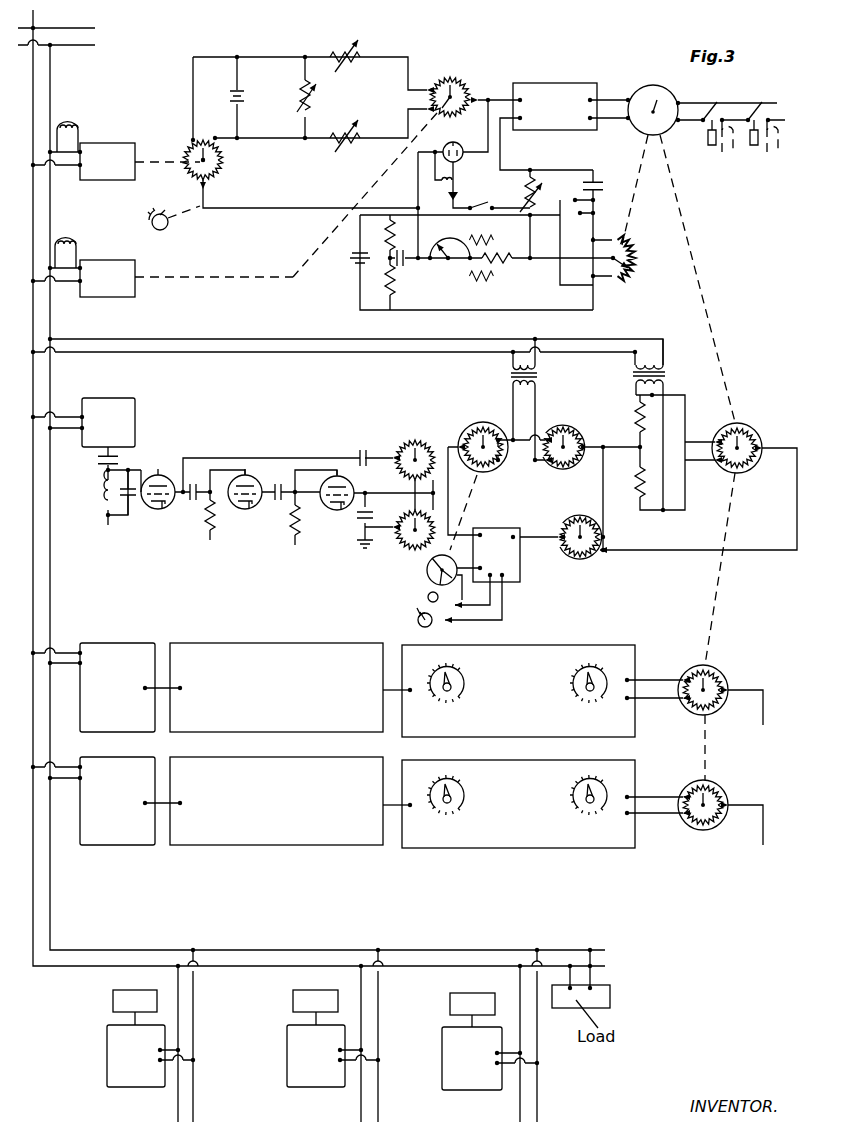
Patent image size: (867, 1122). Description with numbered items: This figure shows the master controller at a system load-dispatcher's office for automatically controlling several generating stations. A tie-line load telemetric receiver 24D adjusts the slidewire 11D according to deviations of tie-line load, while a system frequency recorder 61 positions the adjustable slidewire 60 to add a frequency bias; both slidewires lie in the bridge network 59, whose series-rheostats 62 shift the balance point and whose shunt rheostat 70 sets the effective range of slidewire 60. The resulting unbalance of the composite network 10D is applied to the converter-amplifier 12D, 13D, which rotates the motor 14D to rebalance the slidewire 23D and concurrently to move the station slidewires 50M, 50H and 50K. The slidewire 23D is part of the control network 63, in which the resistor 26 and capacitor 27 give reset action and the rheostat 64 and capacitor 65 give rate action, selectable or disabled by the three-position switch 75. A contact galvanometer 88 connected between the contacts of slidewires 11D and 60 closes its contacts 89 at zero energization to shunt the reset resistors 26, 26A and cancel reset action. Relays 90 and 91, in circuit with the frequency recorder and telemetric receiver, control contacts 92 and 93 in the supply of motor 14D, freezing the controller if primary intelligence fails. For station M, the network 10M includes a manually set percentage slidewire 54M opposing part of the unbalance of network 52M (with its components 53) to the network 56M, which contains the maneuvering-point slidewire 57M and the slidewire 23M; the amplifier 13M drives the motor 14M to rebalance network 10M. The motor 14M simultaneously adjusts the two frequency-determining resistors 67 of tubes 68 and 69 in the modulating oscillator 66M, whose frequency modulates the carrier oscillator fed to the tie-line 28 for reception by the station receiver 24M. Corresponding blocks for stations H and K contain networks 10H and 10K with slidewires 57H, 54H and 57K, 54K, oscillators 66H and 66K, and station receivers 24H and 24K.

The tie-line 28 is at (33, 540).
The relay 90 is at (60, 124).
The relay 91 is at (58, 240).
The contacts 92 is at (717, 98).
The contacts 93 is at (762, 98).
The telemetric receiver 24D is at (140, 161).
The system frequency recorder 61 is at (186, 278).
The composite network 10D is at (283, 146).
The slidewire 11D is at (222, 168).
The bridge network 59 is at (310, 101).
The shunt rheostat 70 is at (300, 95).
The series-rheostats 62 is at (342, 52).
The adjustable slidewire 60 is at (458, 78).
The converter-amplifier 12D is at (570, 106).
The converter-amplifier 13D is at (564, 141).
The motor 14D is at (641, 87).
The contact galvanometer 88 is at (462, 158).
The contacts 89 is at (448, 196).
The rheostat 64 is at (522, 187).
The capacitor 65 is at (598, 180).
The three-position switch 75 is at (602, 198).
The control network 63 is at (481, 262).
The capacitor 27 is at (402, 268).
The resistor 26 is at (462, 246).
The reset resistor 26A is at (505, 264).
The slidewire 23D is at (638, 262).
The modulating oscillator 66M is at (233, 488).
The tube 69 is at (250, 510).
The tube 68 is at (342, 512).
The frequency-determining resistors 67 is at (412, 438).
The slidewire 23M is at (477, 420).
The network 56M is at (517, 486).
The slidewire 57M is at (568, 425).
The resistors 53 is at (637, 413).
The network 52M is at (675, 452).
The station slidewire 50M is at (752, 430).
The slidewire 54M is at (582, 562).
The amplifier 13M is at (482, 574).
The network 10M is at (540, 562).
The motor 14M is at (428, 576).
The modulating oscillator 66H is at (207, 687).
The control circuit 10H is at (533, 691).
The slidewire 57H is at (464, 672).
The slidewire 54H is at (572, 690).
The station slidewire 50H is at (715, 667).
The modulating oscillator 66K is at (207, 801).
The control circuit 10K is at (533, 804).
The slidewire 57K is at (464, 784).
The slidewire 54K is at (570, 796).
The station slidewire 50K is at (715, 783).
The frequency-recorder receiver 24M is at (151, 1038).
The station unit 24H is at (333, 1038).
The station unit 24K is at (490, 1041).